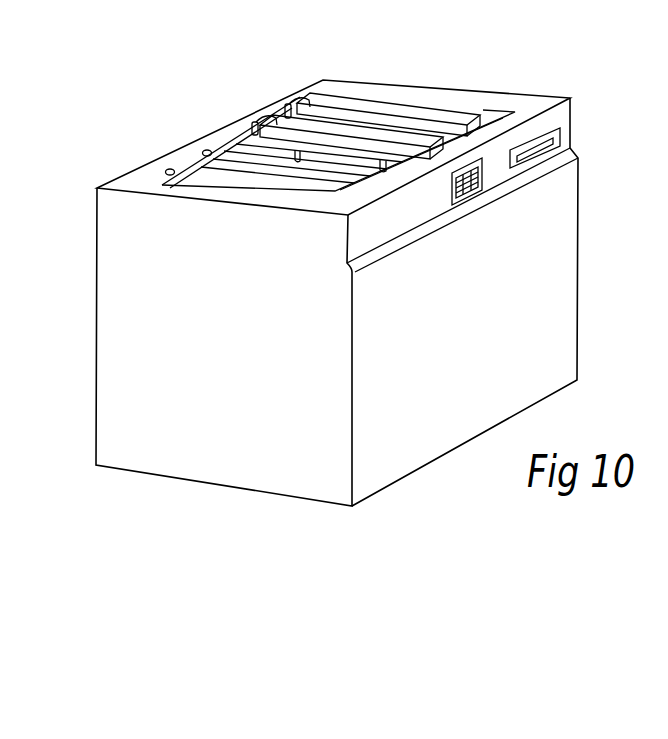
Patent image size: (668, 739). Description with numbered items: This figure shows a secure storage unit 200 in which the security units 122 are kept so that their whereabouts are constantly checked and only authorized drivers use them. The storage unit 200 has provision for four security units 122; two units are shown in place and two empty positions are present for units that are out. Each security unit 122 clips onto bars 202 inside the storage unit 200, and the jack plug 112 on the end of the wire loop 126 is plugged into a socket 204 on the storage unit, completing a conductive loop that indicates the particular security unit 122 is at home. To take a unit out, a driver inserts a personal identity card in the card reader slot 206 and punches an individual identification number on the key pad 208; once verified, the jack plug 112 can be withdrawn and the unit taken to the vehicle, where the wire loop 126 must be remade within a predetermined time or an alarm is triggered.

The storage unit 200 is at (587, 218).
The bars 202 is at (250, 162).
The socket 204 is at (205, 151).
The security unit 122 is at (355, 131).
The jack plug 112 is at (283, 100).
The wire loop 126 is at (296, 100).
The card reader slot 206 is at (566, 135).
The key pad 208 is at (466, 195).